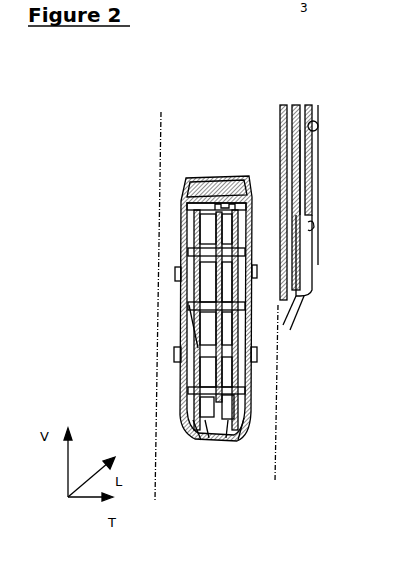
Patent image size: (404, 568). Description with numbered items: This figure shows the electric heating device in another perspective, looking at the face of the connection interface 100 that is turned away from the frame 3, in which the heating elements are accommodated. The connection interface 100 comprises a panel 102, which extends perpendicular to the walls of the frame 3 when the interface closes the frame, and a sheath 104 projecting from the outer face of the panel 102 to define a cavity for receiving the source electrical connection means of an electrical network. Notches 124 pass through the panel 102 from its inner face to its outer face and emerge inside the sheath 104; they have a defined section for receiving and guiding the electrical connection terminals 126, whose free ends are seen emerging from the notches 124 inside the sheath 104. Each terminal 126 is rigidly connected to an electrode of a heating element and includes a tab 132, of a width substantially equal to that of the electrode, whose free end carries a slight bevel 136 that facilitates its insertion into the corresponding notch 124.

The connection interface 100 is at (148, 216).
The panel 102 is at (176, 147).
The sheath 104 is at (244, 392).
The frame 3 is at (298, 197).
The notches 124 is at (213, 303).
The electrical connection terminals 126 is at (200, 396).
The tab 132 is at (214, 255).
The bevel 136 is at (226, 264).